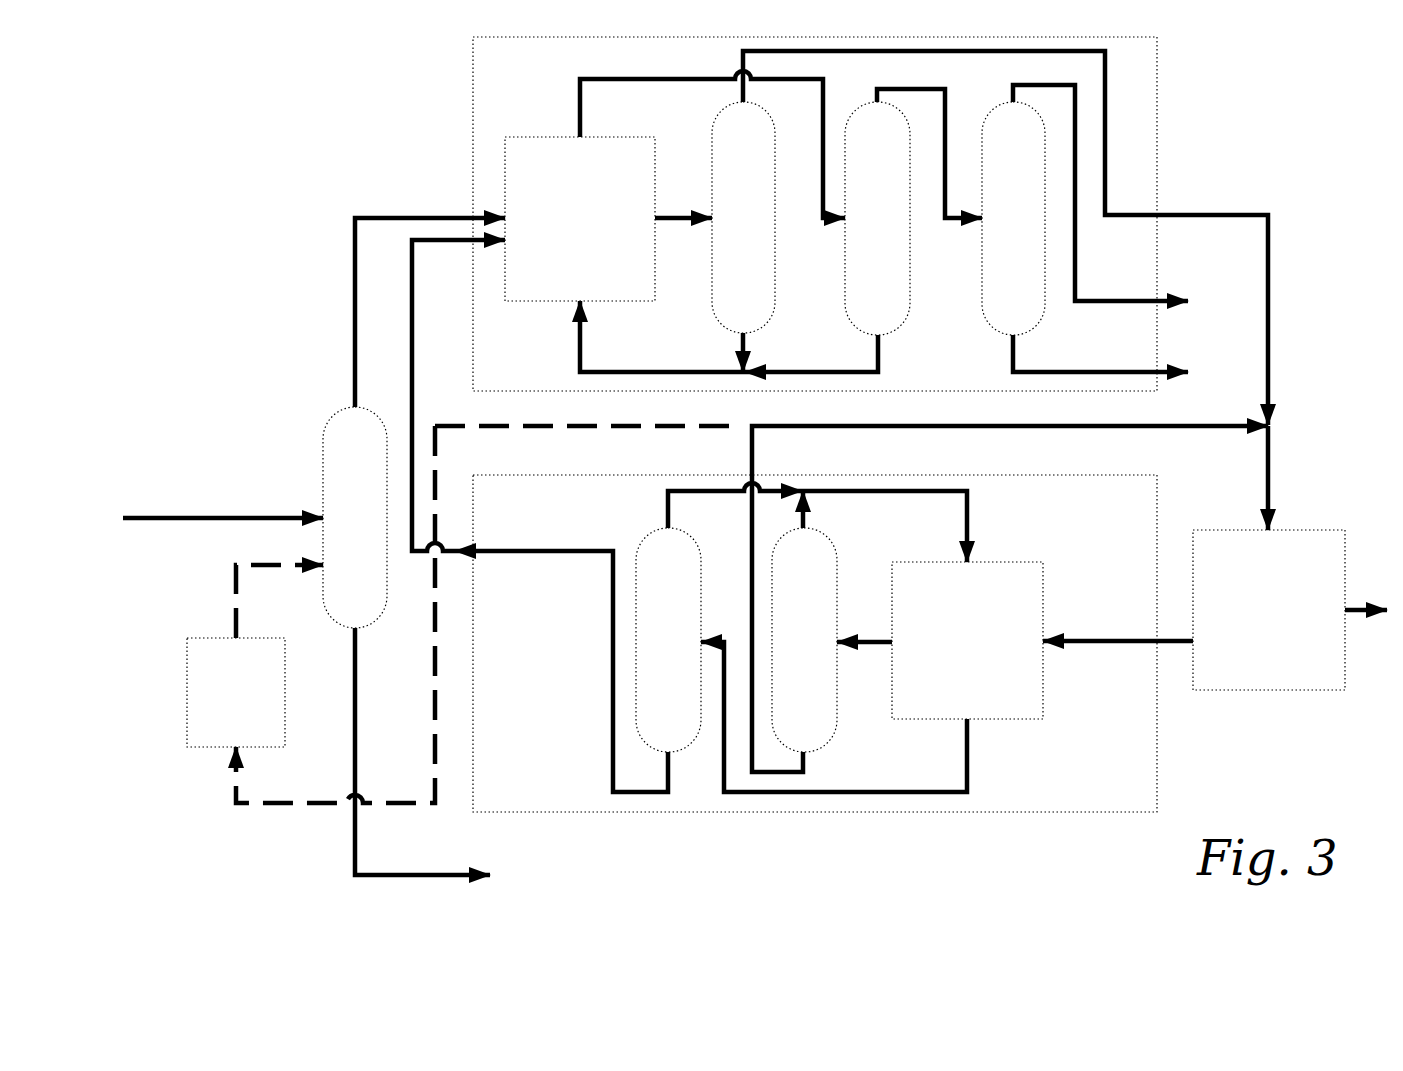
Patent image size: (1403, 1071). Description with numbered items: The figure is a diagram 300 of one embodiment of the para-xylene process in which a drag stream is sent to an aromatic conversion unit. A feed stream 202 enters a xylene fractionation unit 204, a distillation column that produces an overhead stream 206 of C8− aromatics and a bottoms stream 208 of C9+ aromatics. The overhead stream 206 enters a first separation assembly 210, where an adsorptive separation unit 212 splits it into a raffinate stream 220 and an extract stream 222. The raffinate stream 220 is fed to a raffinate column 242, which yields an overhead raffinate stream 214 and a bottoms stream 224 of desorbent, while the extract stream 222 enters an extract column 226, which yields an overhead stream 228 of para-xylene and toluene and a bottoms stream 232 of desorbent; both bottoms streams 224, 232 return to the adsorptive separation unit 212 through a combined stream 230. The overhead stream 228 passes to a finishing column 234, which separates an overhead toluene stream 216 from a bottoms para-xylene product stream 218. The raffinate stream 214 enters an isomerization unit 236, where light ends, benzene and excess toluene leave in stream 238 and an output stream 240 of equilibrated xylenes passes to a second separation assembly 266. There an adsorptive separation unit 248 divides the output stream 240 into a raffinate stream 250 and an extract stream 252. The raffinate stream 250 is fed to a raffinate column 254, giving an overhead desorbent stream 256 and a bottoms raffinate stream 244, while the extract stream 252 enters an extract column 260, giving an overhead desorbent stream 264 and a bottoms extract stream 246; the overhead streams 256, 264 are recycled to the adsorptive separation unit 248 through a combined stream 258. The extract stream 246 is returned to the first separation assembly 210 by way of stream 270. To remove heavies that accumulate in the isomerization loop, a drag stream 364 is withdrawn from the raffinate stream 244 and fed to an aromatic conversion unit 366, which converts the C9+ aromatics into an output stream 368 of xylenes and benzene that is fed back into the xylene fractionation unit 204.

The diagram 300 is at (233, 92).
The first separation assembly 210 is at (470, 116).
The second separation assembly 266 is at (1052, 820).
The adsorptive separation unit 212 is at (580, 219).
The raffinate column 242 is at (743, 217).
The extract column 226 is at (877, 218).
The finishing column 234 is at (1013, 218).
The isomerization unit 236 is at (1269, 610).
The adsorptive separation unit 248 is at (967, 640).
The raffinate column 254 is at (804, 640).
The extract column 260 is at (668, 640).
The xylene fractionation unit 204 is at (355, 517).
The aromatic conversion unit 366 is at (236, 692).
The feed stream 202 is at (203, 515).
The overhead stream 206 is at (353, 283).
The bottoms stream 208 is at (352, 855).
The extract stream 246 is at (500, 553).
The stream 270 is at (414, 416).
The extract stream 222 is at (608, 78).
The raffinate stream 214 is at (1243, 213).
The overhead stream 228 is at (918, 88).
The toluene stream 216 is at (1147, 298).
The para-xylene product stream 218 is at (1133, 368).
The raffinate stream 220 is at (680, 215).
The bottoms stream 224 is at (745, 345).
The bottoms stream 232 is at (880, 355).
The combined stream 230 is at (680, 370).
The raffinate stream 244 is at (857, 430).
The drag stream 364 is at (610, 428).
The output stream 368 is at (235, 618).
The overhead stream 264 is at (667, 515).
The combined stream 258 is at (970, 520).
The overhead stream 256 is at (805, 510).
The raffinate stream 250 is at (862, 633).
The extract stream 252 is at (848, 790).
The output stream 240 is at (1170, 645).
The stream 238 is at (1357, 608).